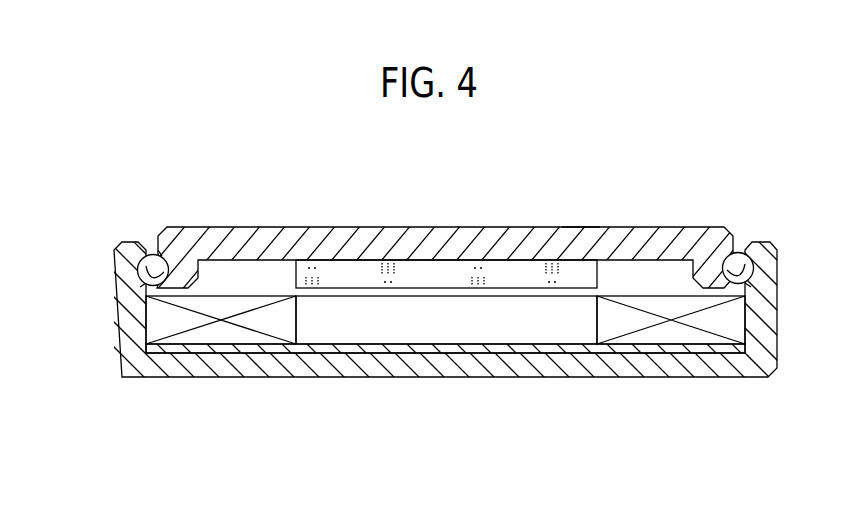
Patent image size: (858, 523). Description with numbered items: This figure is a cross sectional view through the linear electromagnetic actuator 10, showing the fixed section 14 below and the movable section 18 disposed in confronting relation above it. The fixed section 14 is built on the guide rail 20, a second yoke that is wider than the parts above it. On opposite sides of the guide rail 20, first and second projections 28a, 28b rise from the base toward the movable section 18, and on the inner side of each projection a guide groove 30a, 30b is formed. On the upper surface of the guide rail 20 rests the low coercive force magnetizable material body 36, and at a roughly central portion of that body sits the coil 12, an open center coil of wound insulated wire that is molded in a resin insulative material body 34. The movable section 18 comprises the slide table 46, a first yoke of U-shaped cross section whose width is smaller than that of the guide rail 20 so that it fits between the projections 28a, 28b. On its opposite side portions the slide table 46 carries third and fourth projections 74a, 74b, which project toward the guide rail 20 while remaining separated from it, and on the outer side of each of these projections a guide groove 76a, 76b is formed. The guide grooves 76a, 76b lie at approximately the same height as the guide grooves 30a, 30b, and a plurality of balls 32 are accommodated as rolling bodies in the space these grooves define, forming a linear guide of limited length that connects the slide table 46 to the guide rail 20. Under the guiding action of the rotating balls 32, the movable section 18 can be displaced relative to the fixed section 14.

The linear electromagnetic actuator 10 is at (368, 183).
The coil 12 is at (200, 337).
The fixed section 14 is at (429, 342).
The movable section 18 is at (562, 218).
The guide rail 20 is at (238, 367).
The first projection 28a is at (132, 330).
The second projection 28b is at (762, 327).
The guide groove 30a is at (138, 286).
The guide groove 30b is at (773, 280).
The balls 32 is at (152, 266).
The insulative material body 34 is at (428, 322).
The low coercive force magnetizable material body 36 is at (370, 350).
The slide table 46 is at (442, 247).
The third projection 74a is at (180, 268).
The fourth projection 74b is at (713, 268).
The guide groove 76a is at (172, 252).
The guide groove 76b is at (732, 252).